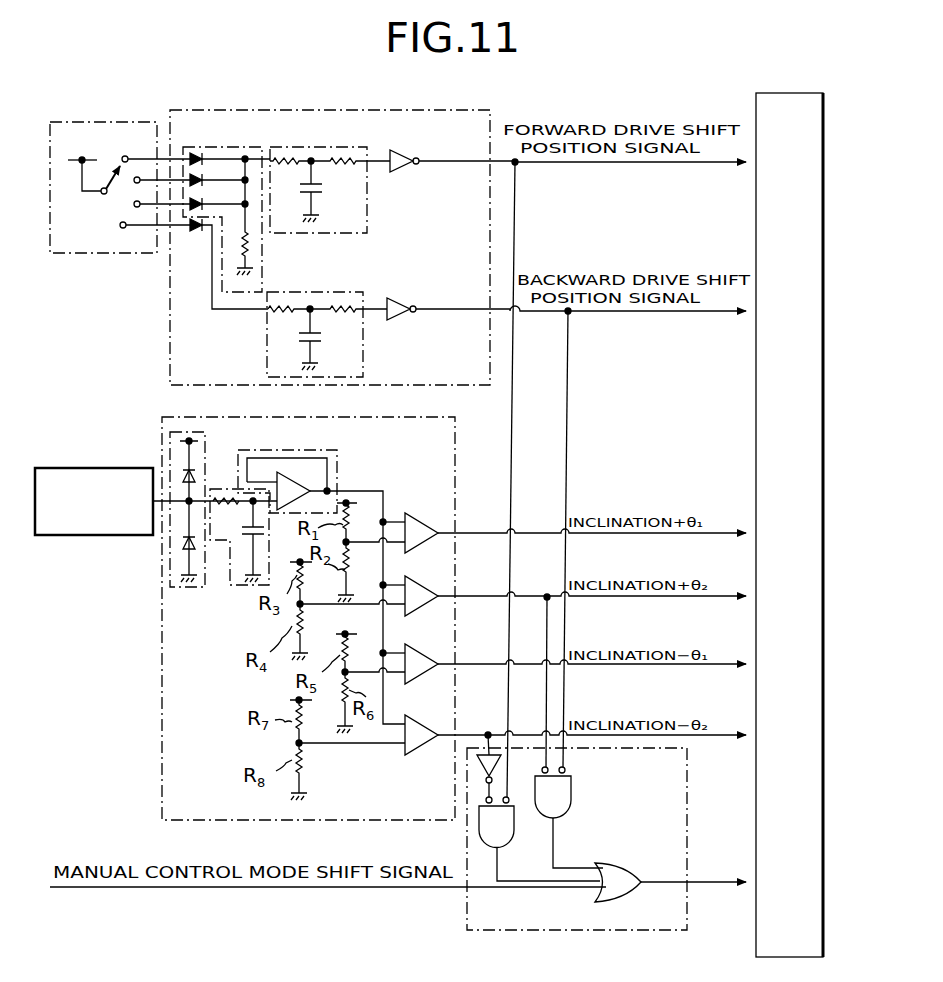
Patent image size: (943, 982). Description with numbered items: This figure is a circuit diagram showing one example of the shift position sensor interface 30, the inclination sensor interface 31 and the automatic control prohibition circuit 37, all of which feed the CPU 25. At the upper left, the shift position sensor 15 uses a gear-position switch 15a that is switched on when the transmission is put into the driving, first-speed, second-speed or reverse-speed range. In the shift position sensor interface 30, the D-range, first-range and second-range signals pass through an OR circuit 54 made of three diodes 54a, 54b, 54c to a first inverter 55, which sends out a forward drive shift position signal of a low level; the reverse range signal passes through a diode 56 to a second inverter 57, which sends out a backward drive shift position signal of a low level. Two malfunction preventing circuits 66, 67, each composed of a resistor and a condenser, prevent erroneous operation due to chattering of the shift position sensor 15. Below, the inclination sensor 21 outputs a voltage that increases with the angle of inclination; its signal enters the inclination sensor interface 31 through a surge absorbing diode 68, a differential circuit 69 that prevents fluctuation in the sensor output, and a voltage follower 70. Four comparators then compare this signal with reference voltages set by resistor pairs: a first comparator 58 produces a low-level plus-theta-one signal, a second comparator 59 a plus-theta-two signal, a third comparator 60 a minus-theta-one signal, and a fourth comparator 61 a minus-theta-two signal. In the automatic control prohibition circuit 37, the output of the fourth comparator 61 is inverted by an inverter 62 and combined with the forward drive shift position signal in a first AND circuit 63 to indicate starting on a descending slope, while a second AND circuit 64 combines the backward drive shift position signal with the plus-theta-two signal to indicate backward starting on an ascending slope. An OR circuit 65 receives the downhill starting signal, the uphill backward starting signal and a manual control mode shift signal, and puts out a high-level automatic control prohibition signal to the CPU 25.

The shift-position sensor 15 is at (110, 257).
The gear-position switch 15a is at (116, 172).
The inclination sensor 21 is at (103, 540).
The CPU 25 is at (778, 92).
The shift position sensor interface 30 is at (348, 108).
The inclination sensor interface 31 is at (160, 750).
The automatic control prohibition circuit 37 is at (653, 933).
The OR circuit 54 is at (211, 185).
The diode 54a is at (196, 154).
The diode 54b is at (189, 181).
The diode 54c is at (189, 206).
The first inverter 55 is at (408, 150).
The diode 56 is at (195, 233).
The second inverter 57 is at (405, 300).
The first comparator 58 is at (417, 512).
The second comparator 59 is at (435, 571).
The third comparator 60 is at (433, 640).
The fourth comparator 61 is at (428, 712).
The inverter 62 is at (476, 762).
The first AND circuit 63 is at (515, 836).
The second AND circuit 64 is at (572, 803).
The OR circuit 65 is at (632, 863).
The malfunction preventing circuit 66 is at (370, 218).
The malfunction preventing circuit 67 is at (366, 332).
The surge absorbing diode 68 is at (190, 592).
The differential circuit 69 is at (237, 592).
The voltage follower 70 is at (340, 460).